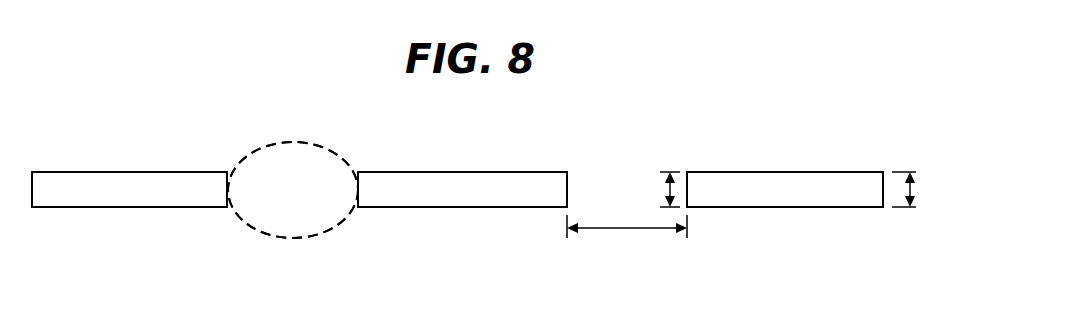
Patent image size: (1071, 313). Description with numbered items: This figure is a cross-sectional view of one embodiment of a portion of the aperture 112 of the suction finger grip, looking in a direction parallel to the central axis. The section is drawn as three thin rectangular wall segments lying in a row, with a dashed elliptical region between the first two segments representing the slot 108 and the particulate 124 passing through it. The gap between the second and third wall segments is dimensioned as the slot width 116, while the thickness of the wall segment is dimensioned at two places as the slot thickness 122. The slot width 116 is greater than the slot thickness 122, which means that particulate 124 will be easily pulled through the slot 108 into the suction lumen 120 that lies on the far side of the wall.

The aperture 112 is at (100, 124).
The slot 108 is at (274, 120).
The particulate 124 is at (266, 258).
The suction lumen 120 is at (462, 213).
The slot width 116 is at (612, 233).
The slot thickness 122 is at (664, 165).